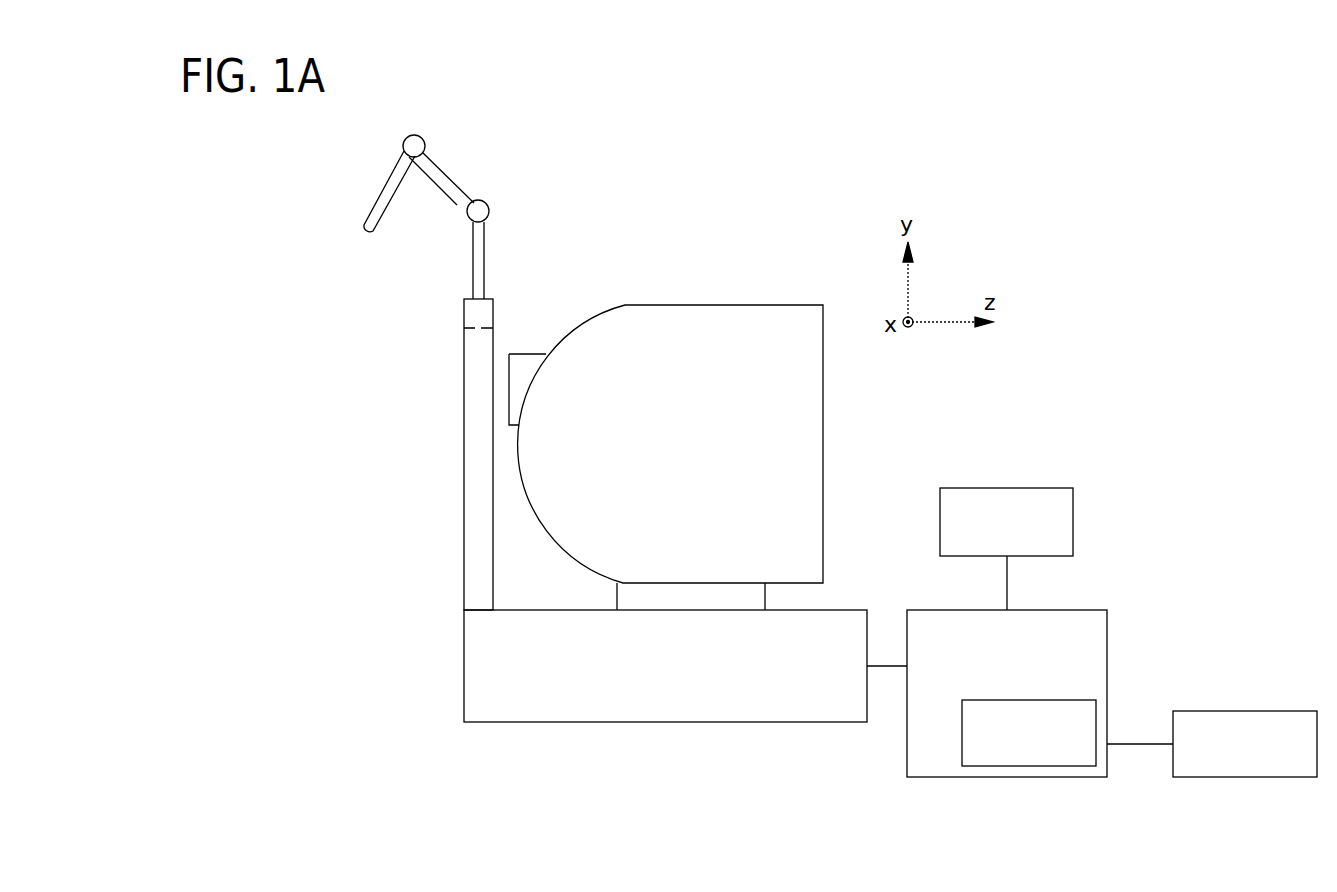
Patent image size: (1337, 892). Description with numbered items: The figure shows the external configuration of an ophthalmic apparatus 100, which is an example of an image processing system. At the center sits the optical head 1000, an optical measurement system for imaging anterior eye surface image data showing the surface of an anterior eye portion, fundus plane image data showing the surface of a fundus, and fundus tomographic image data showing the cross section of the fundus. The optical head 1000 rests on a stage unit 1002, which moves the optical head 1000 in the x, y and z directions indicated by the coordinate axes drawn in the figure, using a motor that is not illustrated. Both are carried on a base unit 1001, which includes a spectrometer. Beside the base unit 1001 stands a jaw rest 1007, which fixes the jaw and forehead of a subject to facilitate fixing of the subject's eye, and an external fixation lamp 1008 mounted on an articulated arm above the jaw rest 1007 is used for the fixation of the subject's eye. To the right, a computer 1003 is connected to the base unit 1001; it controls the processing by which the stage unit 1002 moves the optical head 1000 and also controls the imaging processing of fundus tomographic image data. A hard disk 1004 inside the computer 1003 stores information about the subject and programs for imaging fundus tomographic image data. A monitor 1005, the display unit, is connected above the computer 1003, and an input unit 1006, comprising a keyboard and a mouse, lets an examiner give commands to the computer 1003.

The ophthalmic apparatus 100 is at (1183, 298).
The optical head 1000 is at (821, 466).
The base unit 1001 is at (717, 712).
The stage unit 1002 is at (617, 594).
The computer 1003 is at (1105, 638).
The hard disk 1004 is at (1035, 754).
The monitor 1005 is at (1014, 494).
The input unit 1006 is at (1253, 711).
The jaw rest 1007 is at (468, 385).
The external fixation lamp 1008 is at (465, 163).